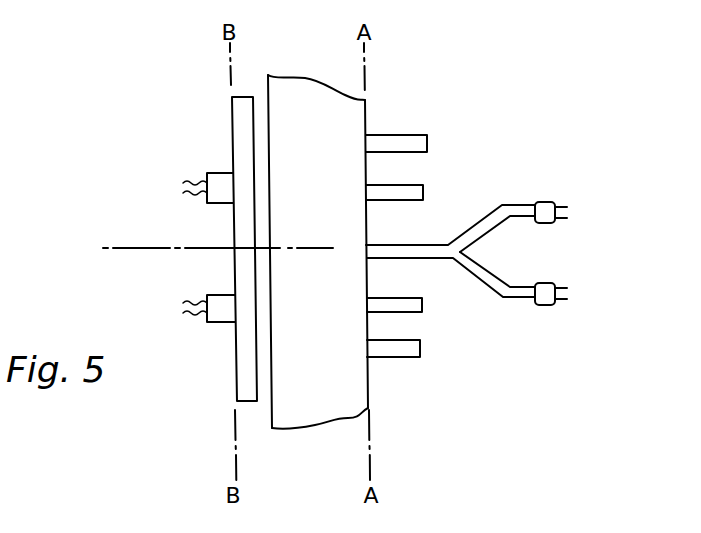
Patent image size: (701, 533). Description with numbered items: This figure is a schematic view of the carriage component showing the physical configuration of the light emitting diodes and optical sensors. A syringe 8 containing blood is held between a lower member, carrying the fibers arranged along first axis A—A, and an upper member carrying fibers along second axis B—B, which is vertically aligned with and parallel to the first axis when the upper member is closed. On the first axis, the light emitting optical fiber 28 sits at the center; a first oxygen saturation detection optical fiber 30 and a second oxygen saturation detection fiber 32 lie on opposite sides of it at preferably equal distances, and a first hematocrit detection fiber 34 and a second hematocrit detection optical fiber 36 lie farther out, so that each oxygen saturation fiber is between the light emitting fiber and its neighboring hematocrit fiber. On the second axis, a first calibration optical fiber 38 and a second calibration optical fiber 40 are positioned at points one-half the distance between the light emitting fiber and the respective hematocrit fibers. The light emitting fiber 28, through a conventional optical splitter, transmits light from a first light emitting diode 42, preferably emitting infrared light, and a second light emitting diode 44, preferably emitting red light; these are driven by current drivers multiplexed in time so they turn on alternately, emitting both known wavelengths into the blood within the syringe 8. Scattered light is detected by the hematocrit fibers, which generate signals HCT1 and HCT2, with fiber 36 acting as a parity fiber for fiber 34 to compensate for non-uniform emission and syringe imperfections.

The syringe 8 is at (350, 117).
The light emitting optical fiber 28 is at (393, 253).
The first oxygen saturation detection optical fiber 30 is at (412, 186).
The second oxygen saturation detection fiber 32 is at (410, 307).
The first hematocrit detection fiber 34 is at (420, 142).
The second hematocrit detection optical fiber 36 is at (412, 346).
The first calibration optical fiber 38 is at (216, 315).
The second calibration optical fiber 40 is at (215, 175).
The first light emitting diode 42 is at (547, 206).
The second light emitting diode 44 is at (543, 293).